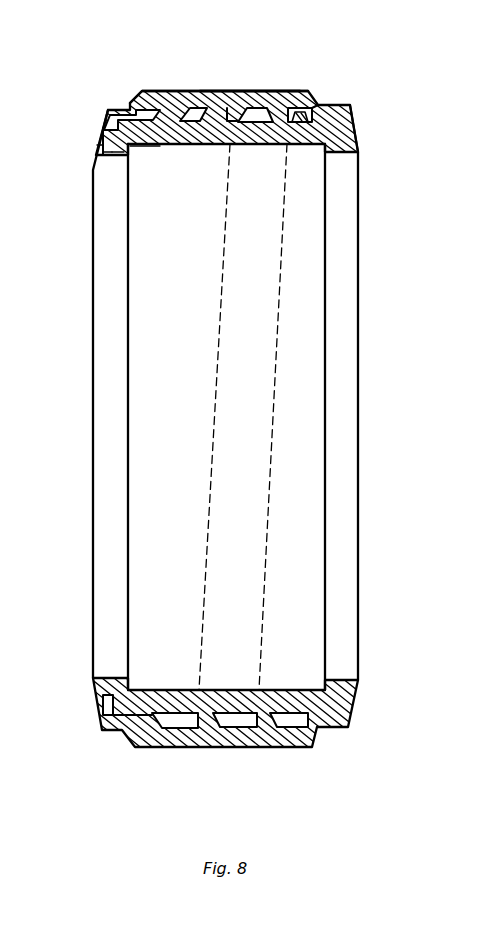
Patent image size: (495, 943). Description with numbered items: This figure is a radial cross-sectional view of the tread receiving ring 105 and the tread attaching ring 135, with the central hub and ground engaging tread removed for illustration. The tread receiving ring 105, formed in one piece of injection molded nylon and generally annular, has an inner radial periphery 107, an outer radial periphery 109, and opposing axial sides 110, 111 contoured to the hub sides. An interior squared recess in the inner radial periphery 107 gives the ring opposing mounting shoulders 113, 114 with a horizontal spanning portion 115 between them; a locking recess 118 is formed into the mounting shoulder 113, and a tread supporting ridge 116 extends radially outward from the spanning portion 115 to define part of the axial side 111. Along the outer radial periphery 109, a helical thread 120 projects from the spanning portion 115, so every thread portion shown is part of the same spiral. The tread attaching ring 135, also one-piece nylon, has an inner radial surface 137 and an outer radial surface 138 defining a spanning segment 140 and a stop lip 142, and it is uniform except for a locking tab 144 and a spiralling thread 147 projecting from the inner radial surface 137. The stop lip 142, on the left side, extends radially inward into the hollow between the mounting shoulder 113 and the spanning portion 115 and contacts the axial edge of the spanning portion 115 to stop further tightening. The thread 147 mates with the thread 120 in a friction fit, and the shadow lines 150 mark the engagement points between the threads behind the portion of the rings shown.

The tread receiving ring 105 is at (374, 128).
The inner radial periphery 107 is at (346, 180).
The outer radial periphery 109 is at (314, 103).
The axial side 110 is at (97, 148).
The axial side 111 is at (345, 120).
The mounting shoulder 113 is at (122, 158).
The mounting shoulder 114 is at (340, 152).
The spanning portion 115 is at (150, 150).
The tread supporting ridge 116 is at (352, 103).
The locking recess 118 is at (108, 156).
The thread 120 is at (112, 110).
The tread attaching ring 135 is at (152, 86).
The inner radial surface 137 is at (185, 112).
The outer radial surface 138 is at (245, 90).
The spanning segment 140 is at (203, 106).
The stop lip 142 is at (96, 118).
The locking tab 144 is at (96, 148).
The thread 147 is at (285, 107).
The shadow lines 150 is at (275, 362).